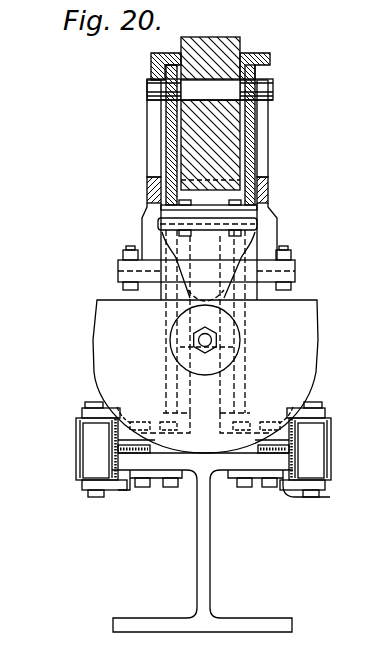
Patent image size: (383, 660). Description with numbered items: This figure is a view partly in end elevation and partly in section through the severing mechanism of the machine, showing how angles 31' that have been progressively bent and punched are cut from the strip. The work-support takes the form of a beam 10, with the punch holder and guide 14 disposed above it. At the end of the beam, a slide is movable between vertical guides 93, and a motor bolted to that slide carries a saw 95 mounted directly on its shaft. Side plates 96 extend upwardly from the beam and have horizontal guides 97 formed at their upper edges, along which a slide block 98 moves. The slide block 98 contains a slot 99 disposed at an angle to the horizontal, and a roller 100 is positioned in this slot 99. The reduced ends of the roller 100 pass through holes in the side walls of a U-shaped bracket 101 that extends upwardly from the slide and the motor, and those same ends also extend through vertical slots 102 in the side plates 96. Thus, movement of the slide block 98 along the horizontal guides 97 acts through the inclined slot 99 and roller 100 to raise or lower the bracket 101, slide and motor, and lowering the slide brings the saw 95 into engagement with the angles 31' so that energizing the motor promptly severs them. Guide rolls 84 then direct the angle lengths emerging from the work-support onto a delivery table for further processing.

The beam 10 is at (200, 552).
The punch holder and guide 14 is at (120, 275).
The angles 31' is at (224, 480).
The guide rolls 84 is at (92, 440).
The vertical guides 93 is at (279, 229).
The saw 95 is at (94, 330).
The side plates 96 is at (150, 188).
The horizontal guides 97 is at (152, 58).
The slide block 98 is at (193, 124).
The slot 99 is at (192, 107).
The roller 100 is at (210, 89).
The U-shaped bracket 101 is at (250, 158).
The vertical slots 102 is at (155, 150).